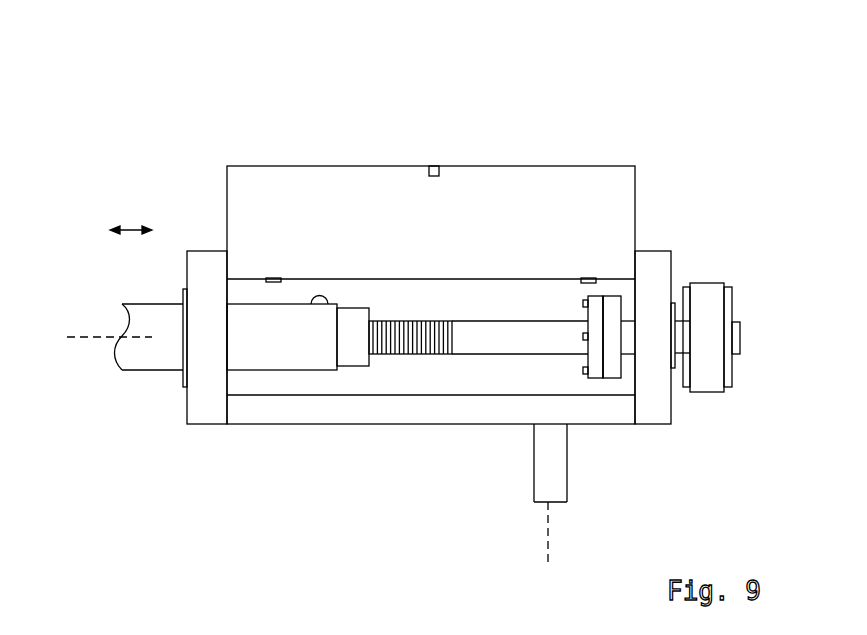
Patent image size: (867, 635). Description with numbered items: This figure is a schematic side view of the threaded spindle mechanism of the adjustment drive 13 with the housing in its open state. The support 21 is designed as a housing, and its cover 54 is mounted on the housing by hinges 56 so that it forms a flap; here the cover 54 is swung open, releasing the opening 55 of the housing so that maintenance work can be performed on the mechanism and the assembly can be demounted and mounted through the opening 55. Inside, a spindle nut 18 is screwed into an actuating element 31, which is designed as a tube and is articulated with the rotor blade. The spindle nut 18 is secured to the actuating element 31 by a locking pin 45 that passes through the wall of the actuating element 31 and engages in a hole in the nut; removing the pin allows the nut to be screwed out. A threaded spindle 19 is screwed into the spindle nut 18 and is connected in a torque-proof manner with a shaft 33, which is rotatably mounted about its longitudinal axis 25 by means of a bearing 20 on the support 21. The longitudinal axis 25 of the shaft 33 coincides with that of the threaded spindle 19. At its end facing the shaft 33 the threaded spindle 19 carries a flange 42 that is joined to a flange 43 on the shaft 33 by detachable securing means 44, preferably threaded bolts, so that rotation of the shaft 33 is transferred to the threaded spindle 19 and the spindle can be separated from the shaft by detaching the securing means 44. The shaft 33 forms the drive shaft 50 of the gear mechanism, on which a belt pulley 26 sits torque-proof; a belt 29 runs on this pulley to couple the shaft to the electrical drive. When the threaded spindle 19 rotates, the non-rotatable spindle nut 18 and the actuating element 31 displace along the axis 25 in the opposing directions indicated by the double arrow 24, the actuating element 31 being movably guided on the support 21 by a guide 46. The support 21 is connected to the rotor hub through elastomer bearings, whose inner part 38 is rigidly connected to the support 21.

The adjustment drive 13 is at (318, 112).
The spindle nut 18 is at (354, 314).
The threaded spindle 19 is at (469, 353).
The bearing 20 is at (673, 368).
The support 21 is at (197, 253).
The double arrow 24 is at (132, 228).
The longitudinal axis 25 is at (63, 334).
The belt pulley 26 is at (728, 379).
The belt 29 is at (713, 284).
The actuating element 31 is at (121, 362).
The shaft 33 is at (627, 347).
The inner part 38 is at (560, 502).
The flange 42 is at (596, 295).
The flange 43 is at (612, 303).
The securing means 44 is at (583, 303).
The locking pin 45 is at (316, 296).
The guide 46 is at (183, 387).
The drive shaft 50 is at (739, 332).
The cover 54 is at (467, 173).
The opening 55 is at (377, 388).
The hinges 56 is at (269, 277).